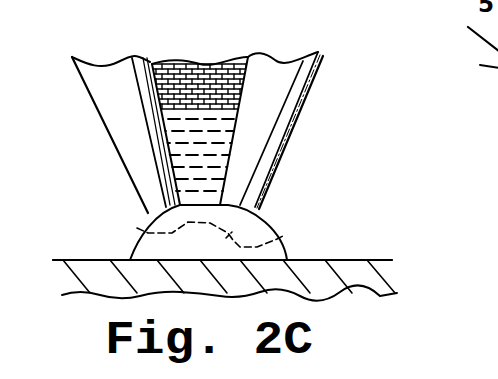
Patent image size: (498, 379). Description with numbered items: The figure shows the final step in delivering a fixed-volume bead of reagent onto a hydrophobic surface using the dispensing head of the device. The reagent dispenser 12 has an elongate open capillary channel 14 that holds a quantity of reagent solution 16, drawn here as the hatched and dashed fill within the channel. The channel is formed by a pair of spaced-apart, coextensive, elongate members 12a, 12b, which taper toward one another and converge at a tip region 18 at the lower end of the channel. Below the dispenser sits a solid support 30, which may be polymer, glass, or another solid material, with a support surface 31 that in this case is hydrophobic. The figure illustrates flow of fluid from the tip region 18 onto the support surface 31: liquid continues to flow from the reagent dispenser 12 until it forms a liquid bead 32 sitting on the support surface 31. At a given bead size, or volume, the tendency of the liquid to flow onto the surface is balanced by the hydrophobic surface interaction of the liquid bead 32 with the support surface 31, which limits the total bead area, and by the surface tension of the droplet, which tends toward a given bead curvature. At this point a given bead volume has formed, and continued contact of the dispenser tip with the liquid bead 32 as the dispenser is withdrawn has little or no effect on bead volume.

The reagent dispenser 12 is at (227, 114).
The elongate member 12a is at (273, 68).
The elongate member 12b is at (113, 73).
The open capillary channel 14 is at (231, 189).
The reagent solution 16 is at (200, 66).
The tip region 18 is at (281, 242).
The solid support 30 is at (373, 260).
The support surface 31 is at (105, 258).
The liquid bead 32 is at (145, 235).